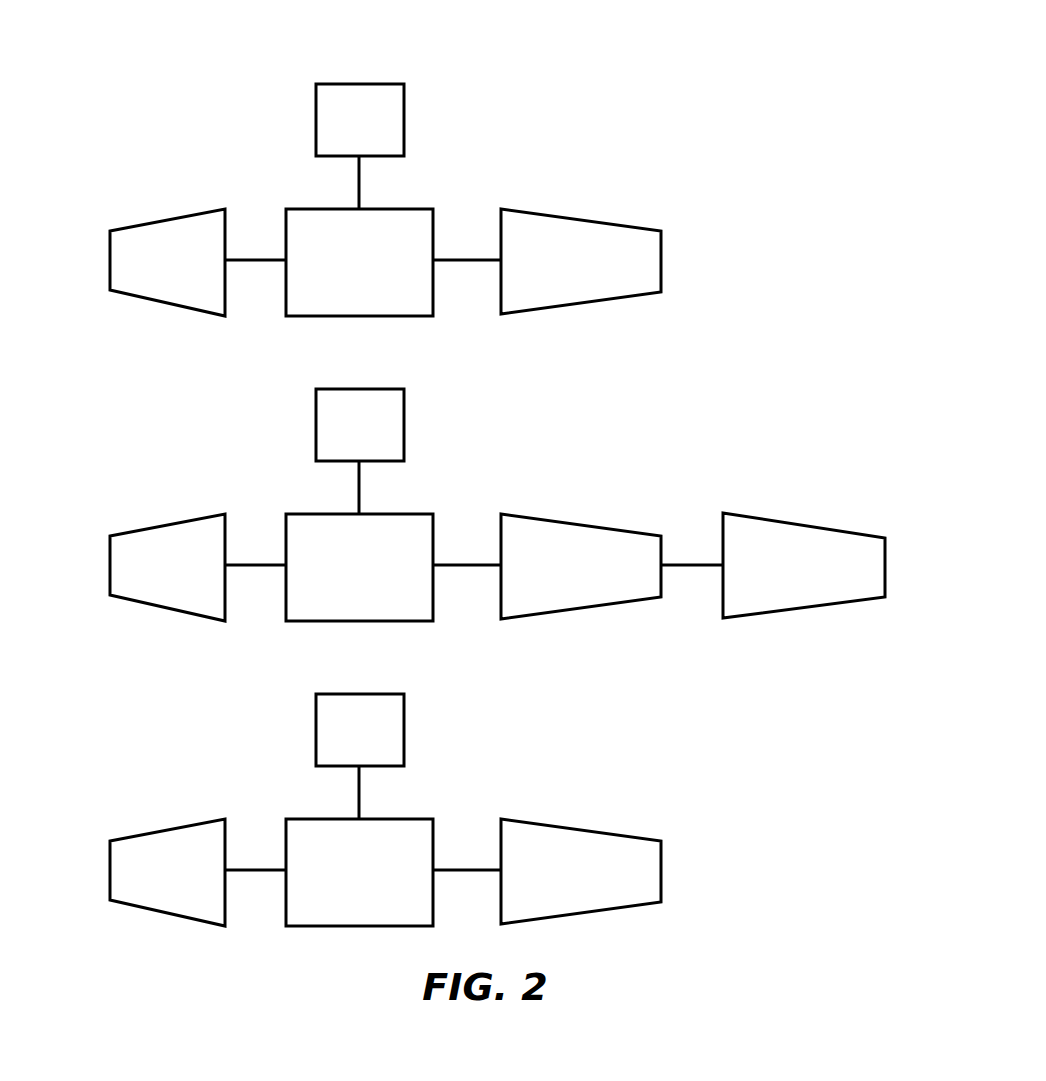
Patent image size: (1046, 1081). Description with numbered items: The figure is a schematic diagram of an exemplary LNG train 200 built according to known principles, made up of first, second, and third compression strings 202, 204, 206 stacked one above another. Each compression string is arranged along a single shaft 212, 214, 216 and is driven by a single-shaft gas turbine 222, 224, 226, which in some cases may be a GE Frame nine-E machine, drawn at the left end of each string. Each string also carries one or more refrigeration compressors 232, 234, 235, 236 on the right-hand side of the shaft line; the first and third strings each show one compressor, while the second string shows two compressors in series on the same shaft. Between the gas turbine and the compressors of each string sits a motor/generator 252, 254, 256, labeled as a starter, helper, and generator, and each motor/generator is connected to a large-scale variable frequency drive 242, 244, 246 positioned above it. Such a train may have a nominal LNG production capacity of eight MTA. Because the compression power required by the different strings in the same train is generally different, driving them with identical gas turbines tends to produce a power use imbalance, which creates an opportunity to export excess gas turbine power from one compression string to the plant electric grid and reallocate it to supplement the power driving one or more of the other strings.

The LNG train 200 is at (798, 75).
The first compression string 202 is at (84, 229).
The second compression string 204 is at (84, 534).
The third compression string 206 is at (84, 839).
The shaft 212 is at (466, 258).
The shaft 214 is at (466, 563).
The shaft 216 is at (466, 868).
The single-shaft gas turbine 222 is at (170, 218).
The single-shaft gas turbine 224 is at (170, 523).
The single-shaft gas turbine 226 is at (170, 828).
The refrigeration compressor 232 is at (578, 219).
The refrigeration compressor 234 is at (578, 524).
The refrigeration compressor 235 is at (800, 523).
The refrigeration compressor 236 is at (578, 829).
The variable frequency drive 242 is at (316, 101).
The variable frequency drive 244 is at (316, 406).
The variable frequency drive 246 is at (316, 711).
The motor/generator 252 is at (329, 207).
The motor/generator 254 is at (329, 512).
The motor/generator 256 is at (329, 817).